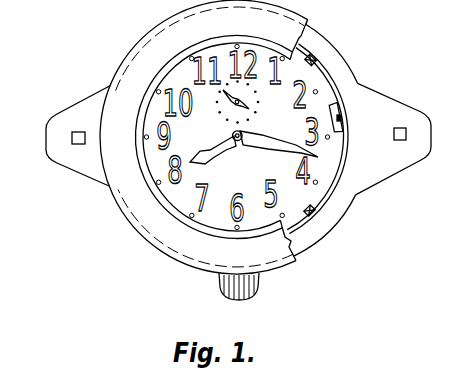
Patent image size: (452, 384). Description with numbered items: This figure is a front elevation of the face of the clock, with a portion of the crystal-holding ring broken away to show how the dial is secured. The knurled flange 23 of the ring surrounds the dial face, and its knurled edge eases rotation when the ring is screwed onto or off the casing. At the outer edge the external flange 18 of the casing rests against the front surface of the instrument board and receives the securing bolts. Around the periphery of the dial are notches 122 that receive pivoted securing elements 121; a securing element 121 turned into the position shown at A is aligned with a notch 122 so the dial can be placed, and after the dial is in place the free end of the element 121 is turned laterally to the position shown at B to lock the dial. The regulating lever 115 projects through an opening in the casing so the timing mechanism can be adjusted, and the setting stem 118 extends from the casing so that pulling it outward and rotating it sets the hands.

The external flange 18 is at (326, 229).
The flange of the ring 23 is at (197, 272).
The regulating lever 115 is at (347, 121).
The setting stem 118 is at (229, 300).
The securing elements 121 is at (315, 58).
The notches 122 is at (331, 76).
The position A is at (320, 50).
The position B is at (309, 216).